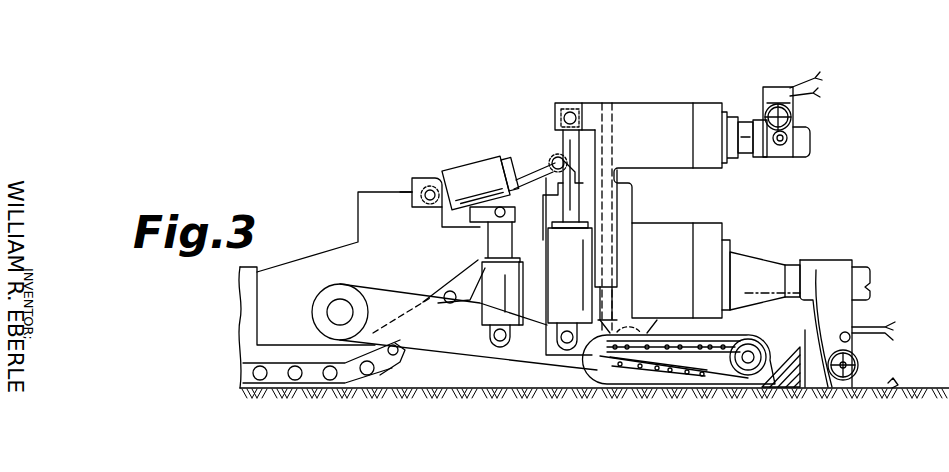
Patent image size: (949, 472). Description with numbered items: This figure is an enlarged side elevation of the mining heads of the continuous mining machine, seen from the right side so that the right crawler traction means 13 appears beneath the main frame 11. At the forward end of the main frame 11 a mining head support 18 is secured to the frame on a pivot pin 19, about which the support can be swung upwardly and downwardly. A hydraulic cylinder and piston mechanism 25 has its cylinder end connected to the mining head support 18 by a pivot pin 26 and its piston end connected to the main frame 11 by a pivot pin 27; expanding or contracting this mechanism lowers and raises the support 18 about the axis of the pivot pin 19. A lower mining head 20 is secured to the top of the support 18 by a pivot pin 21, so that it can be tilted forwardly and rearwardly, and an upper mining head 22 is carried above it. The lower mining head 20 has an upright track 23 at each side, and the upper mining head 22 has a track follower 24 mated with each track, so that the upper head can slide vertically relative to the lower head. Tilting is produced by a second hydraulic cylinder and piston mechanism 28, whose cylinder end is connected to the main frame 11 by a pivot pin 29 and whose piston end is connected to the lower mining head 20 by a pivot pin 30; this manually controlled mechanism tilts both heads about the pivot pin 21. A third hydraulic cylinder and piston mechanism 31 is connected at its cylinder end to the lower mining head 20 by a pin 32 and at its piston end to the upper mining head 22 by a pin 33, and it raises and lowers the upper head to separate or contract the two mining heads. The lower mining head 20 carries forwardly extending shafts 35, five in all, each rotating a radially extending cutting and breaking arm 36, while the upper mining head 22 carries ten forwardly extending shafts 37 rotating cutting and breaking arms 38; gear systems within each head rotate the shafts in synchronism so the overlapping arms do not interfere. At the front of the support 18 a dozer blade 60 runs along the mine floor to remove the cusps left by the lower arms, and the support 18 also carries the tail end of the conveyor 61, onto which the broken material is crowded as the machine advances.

The main frame 11 is at (373, 198).
The right crawler traction means 13 is at (318, 372).
The mining head support 18 is at (447, 343).
The pivot pin 19 is at (342, 307).
The lower mining head 20 is at (670, 233).
The pivot pin 21 is at (655, 328).
The upper mining head 22 is at (650, 112).
The upright track 23 is at (607, 300).
The track follower 24 is at (615, 207).
The hydraulic cylinder and piston mechanism 25 is at (492, 270).
The pivot pin 26 is at (500, 341).
The pivot pin 27 is at (505, 212).
The hydraulic cylinder and piston mechanism 28 is at (473, 172).
The pivot pin 29 is at (428, 190).
The pivot pin 30 is at (553, 155).
The hydraulic cylinder and piston mechanism 31 is at (578, 265).
The pin 32 is at (566, 343).
The pin 33 is at (570, 112).
The forwardly extending shaft 35 is at (793, 268).
The cutting and breaking arm 36 is at (843, 320).
The forwardly extending shaft 37 is at (747, 130).
The cutting and breaking arm 38 is at (775, 90).
The dozer blade 60 is at (798, 386).
The conveyor 61 is at (713, 347).